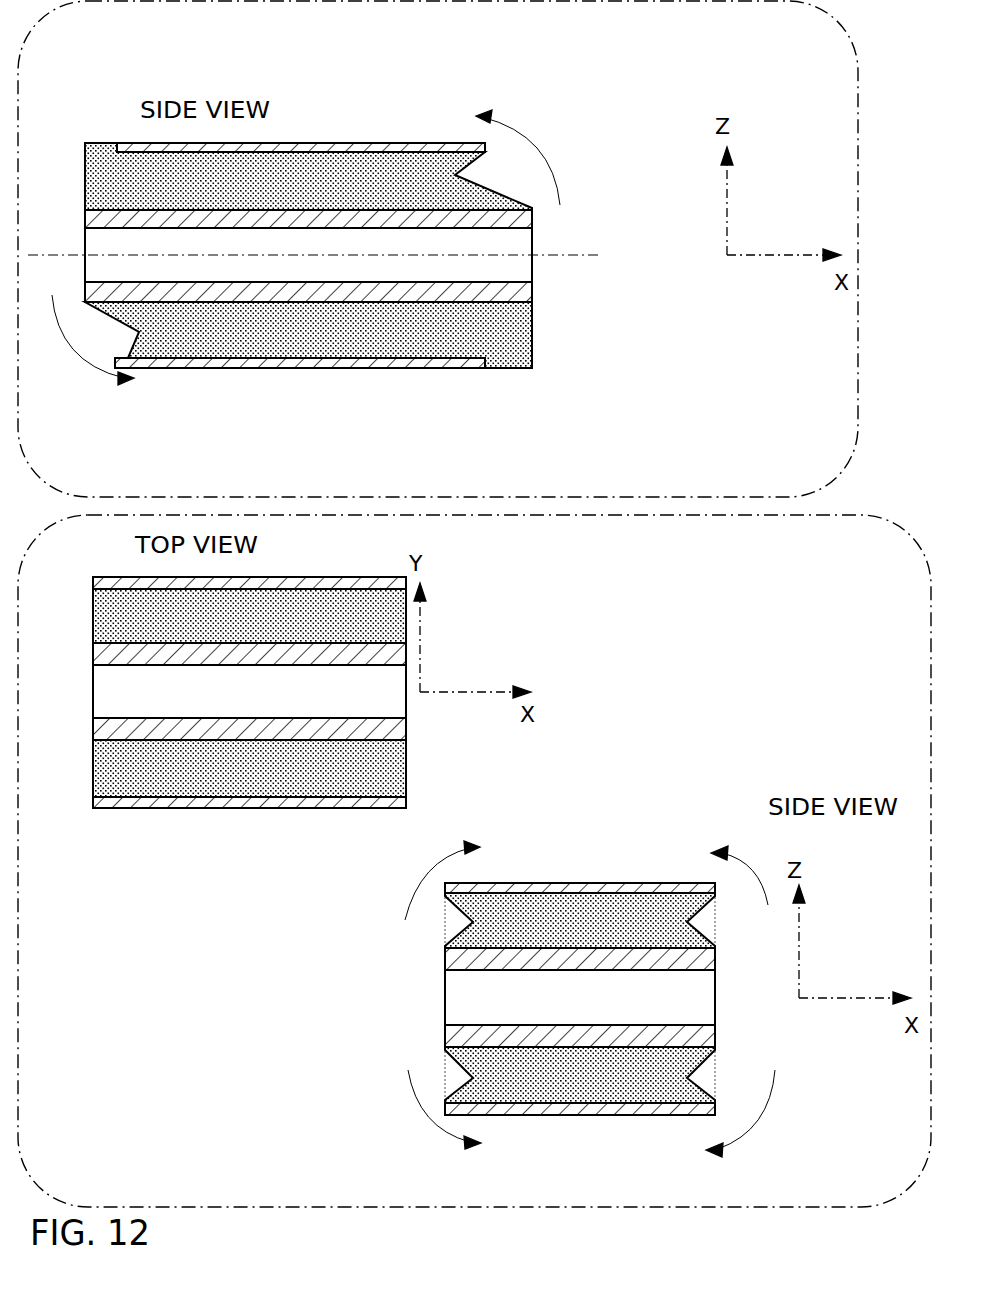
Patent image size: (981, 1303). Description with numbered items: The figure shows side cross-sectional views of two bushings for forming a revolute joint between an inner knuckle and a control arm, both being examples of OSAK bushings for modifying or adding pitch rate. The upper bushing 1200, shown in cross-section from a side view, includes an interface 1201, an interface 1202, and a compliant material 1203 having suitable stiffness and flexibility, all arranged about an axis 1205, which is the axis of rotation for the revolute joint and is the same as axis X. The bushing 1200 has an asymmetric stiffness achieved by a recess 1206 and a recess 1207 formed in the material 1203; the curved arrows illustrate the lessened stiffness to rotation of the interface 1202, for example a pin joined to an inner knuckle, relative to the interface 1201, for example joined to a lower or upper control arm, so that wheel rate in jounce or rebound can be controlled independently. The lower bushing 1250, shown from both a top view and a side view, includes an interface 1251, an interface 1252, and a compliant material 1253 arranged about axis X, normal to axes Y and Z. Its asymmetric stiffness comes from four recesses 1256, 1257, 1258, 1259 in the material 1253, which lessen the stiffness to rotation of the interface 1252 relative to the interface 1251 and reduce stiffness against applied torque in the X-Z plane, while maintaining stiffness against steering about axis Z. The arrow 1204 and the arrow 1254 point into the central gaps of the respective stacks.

The bushing 1200 is at (755, 37).
The interface 1201 is at (382, 368).
The interface 1202 is at (288, 305).
The material 1203 is at (516, 325).
The channel gap between layers 1204 is at (397, 228).
The axis 1205 is at (592, 262).
The recess 1206 is at (148, 368).
The recess 1207 is at (462, 143).
The bushing 1250 is at (843, 545).
The interface 1251 is at (173, 808).
The interface 1252 is at (120, 808).
The material 1253 is at (233, 808).
The channel gap between layers 1254 is at (337, 684).
The recess 1256 is at (492, 1115).
The recess 1257 is at (490, 883).
The recess 1258 is at (684, 883).
The recess 1259 is at (683, 1115).